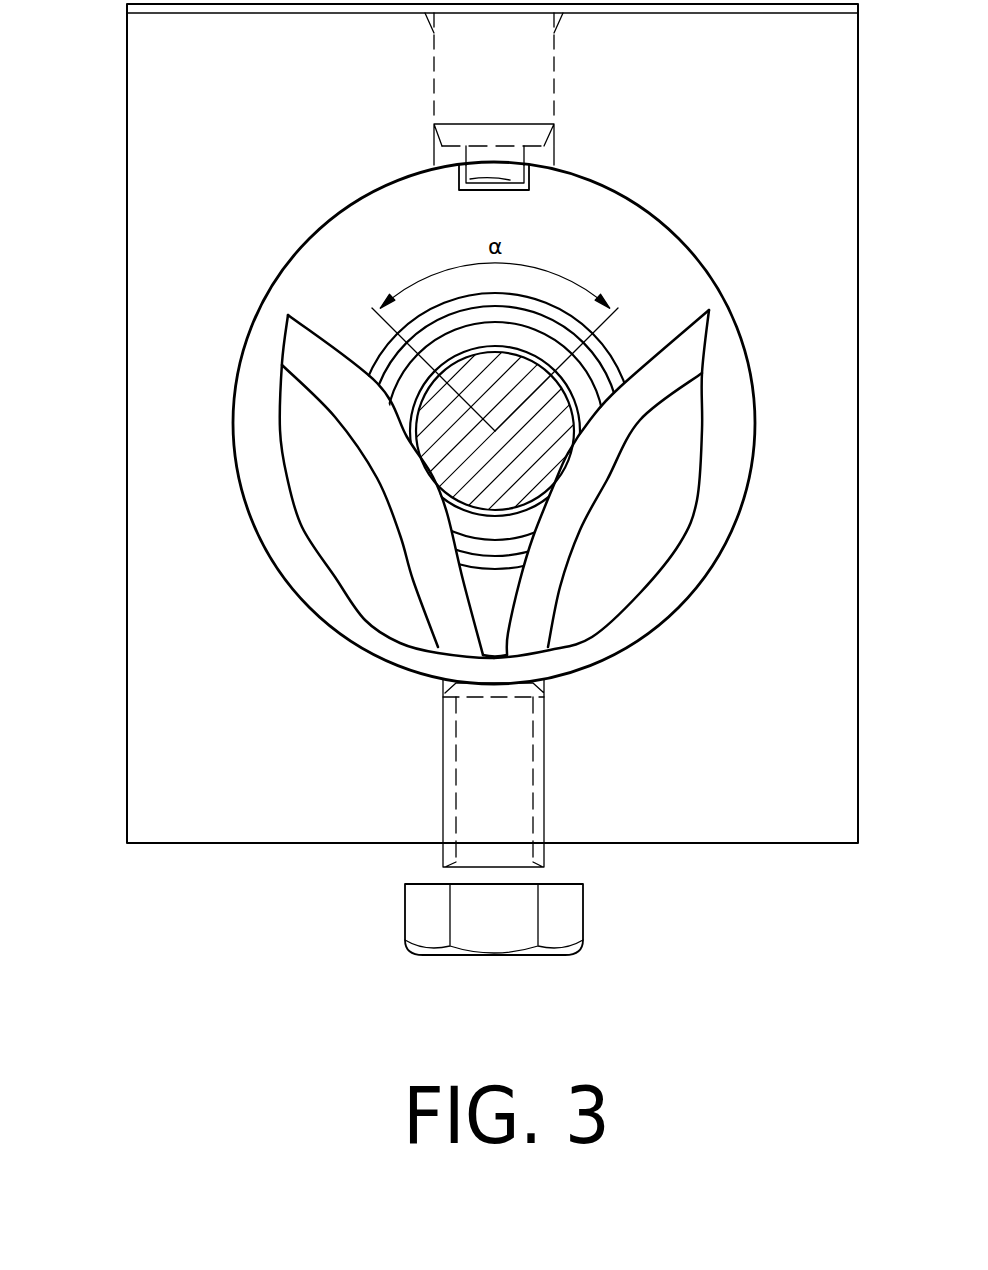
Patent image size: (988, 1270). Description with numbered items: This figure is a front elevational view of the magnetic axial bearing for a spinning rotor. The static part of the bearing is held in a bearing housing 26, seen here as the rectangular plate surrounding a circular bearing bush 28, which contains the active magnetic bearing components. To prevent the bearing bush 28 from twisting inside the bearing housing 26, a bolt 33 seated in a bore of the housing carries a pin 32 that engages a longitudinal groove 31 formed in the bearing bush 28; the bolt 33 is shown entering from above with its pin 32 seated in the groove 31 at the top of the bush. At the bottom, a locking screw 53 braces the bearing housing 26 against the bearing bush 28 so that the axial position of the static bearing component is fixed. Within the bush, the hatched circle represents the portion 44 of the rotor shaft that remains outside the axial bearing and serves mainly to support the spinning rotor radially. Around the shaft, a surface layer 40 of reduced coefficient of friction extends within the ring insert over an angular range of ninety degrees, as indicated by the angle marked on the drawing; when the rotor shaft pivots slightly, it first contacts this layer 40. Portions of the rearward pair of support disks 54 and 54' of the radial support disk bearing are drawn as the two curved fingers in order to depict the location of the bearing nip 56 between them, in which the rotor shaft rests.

The bearing housing 26 is at (170, 660).
The bearing bush 28 is at (685, 550).
The longitudinal groove 31 is at (490, 175).
The pin 32 is at (488, 154).
The bolt 33 is at (515, 67).
The surface layer 40 is at (508, 356).
The remaining portion of the shaft 44 is at (549, 432).
The locking screw 53 is at (557, 907).
The support disk 54 is at (601, 526).
The support disk 54' is at (387, 508).
The bearing nip 56 is at (494, 576).